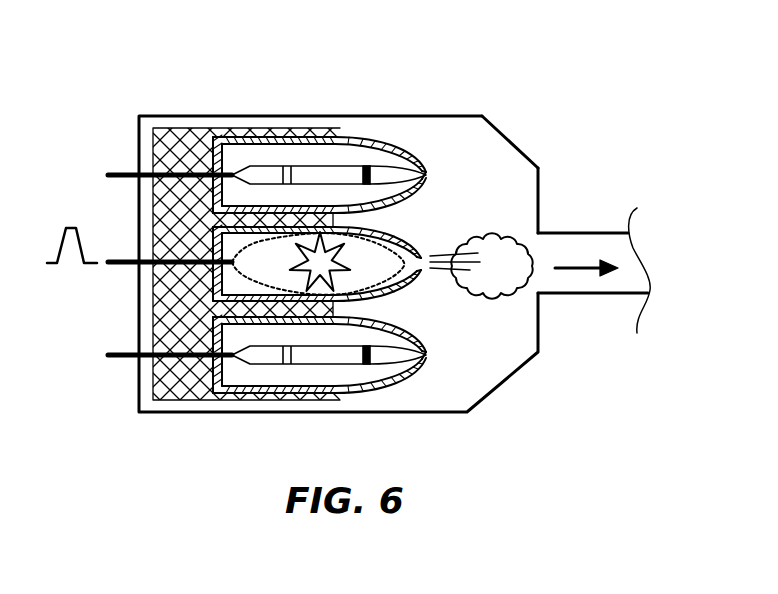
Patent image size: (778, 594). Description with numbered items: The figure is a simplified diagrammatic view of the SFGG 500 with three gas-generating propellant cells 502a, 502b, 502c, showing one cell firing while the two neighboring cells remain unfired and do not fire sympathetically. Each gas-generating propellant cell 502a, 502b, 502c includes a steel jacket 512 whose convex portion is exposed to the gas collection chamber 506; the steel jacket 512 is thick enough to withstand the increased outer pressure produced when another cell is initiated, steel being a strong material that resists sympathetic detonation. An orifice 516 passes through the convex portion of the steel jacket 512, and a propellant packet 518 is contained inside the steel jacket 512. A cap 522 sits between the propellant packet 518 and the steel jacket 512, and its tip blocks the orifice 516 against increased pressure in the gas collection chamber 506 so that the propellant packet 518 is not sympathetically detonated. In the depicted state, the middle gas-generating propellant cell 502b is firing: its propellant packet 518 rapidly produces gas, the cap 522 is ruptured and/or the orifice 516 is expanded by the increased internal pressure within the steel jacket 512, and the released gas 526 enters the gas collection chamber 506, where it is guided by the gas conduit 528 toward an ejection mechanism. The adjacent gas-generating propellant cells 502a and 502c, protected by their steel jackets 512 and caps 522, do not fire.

The SFGG 500 is at (468, 115).
The gas-generating propellant cell 502a is at (319, 127).
The gas-generating propellant cell 502b is at (383, 232).
The gas-generating propellant cell 502c is at (380, 393).
The gas collection chamber 506 is at (523, 105).
The steel jacket 512 is at (347, 137).
The orifice 516 is at (420, 258).
The propellant packet 518 is at (270, 166).
The cap 522 is at (398, 173).
The gas 526 is at (508, 276).
The gas conduit 528 is at (597, 294).